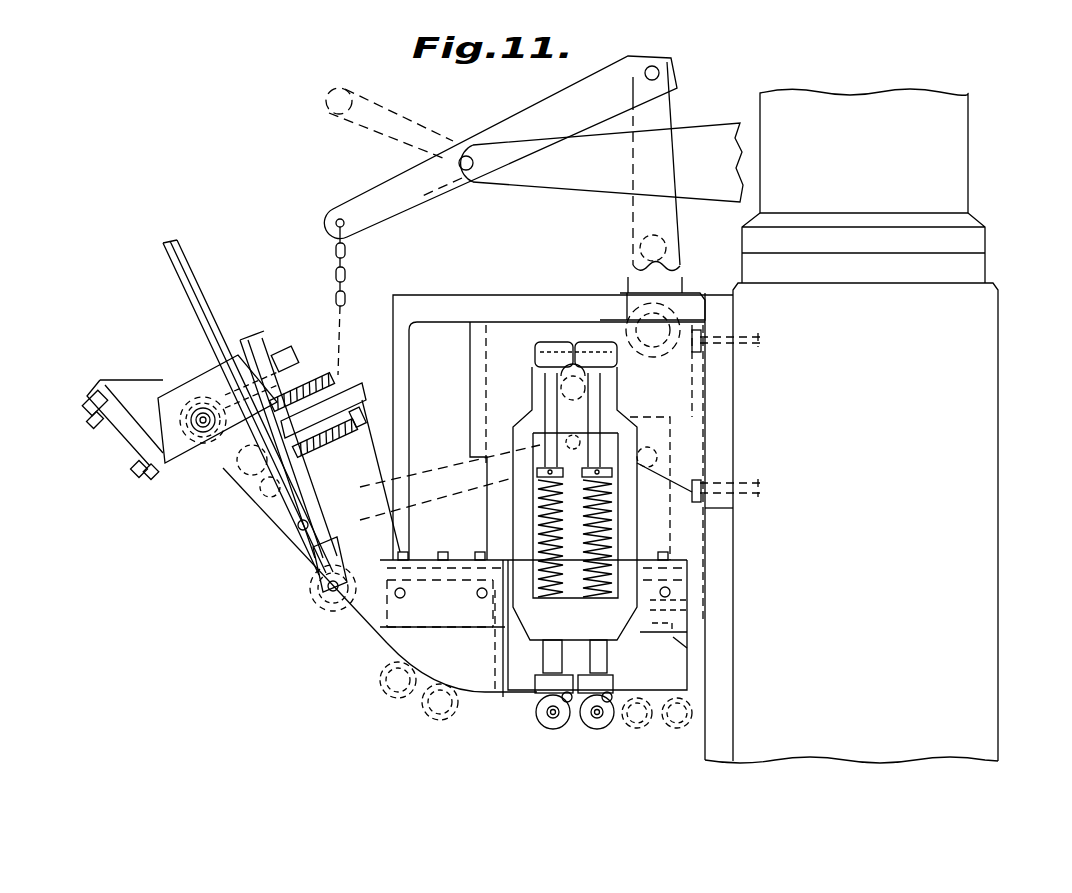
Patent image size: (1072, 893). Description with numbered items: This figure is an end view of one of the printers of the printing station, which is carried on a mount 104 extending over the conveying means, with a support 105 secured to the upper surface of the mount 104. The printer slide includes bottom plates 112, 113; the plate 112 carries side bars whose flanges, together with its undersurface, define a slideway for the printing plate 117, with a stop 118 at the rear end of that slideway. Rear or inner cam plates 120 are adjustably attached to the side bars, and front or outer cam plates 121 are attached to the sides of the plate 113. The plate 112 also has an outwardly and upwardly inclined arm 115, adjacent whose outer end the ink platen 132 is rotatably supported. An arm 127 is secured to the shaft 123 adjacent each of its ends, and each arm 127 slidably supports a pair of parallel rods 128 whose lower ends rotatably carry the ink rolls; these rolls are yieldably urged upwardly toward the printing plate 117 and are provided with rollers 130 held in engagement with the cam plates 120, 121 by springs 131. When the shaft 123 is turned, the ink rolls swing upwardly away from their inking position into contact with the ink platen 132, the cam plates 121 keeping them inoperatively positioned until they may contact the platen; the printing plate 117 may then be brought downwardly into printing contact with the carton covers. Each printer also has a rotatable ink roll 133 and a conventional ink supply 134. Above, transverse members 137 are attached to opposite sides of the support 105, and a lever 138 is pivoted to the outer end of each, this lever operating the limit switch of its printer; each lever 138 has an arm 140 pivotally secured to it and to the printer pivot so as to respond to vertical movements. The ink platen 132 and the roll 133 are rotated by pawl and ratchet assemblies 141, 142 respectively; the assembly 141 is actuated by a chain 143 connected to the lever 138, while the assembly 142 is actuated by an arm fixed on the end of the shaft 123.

The mount 104 is at (972, 580).
The support 105 is at (882, 100).
The bottom plate 112 is at (693, 619).
The bottom plate 113 is at (397, 633).
The arm 115 is at (360, 490).
The printing plate 117 is at (625, 702).
The stop 118 is at (693, 655).
The rear cam plate 120 is at (522, 683).
The front cam plate 121 is at (482, 675).
The shaft 123 is at (585, 388).
The arm 127 is at (632, 528).
The rod 128 is at (553, 657).
The roller 130 is at (562, 733).
The spring 131 is at (600, 505).
The ink platen 132 is at (190, 298).
The ink roll 133 is at (206, 455).
The ink supply 134 is at (137, 387).
The transverse member 137 is at (713, 128).
The lever 138 is at (418, 195).
The arm 140 is at (638, 222).
The pawl and ratchet assembly 141 is at (340, 375).
The pawl and ratchet assembly 142 is at (280, 545).
The chain 143 is at (338, 277).